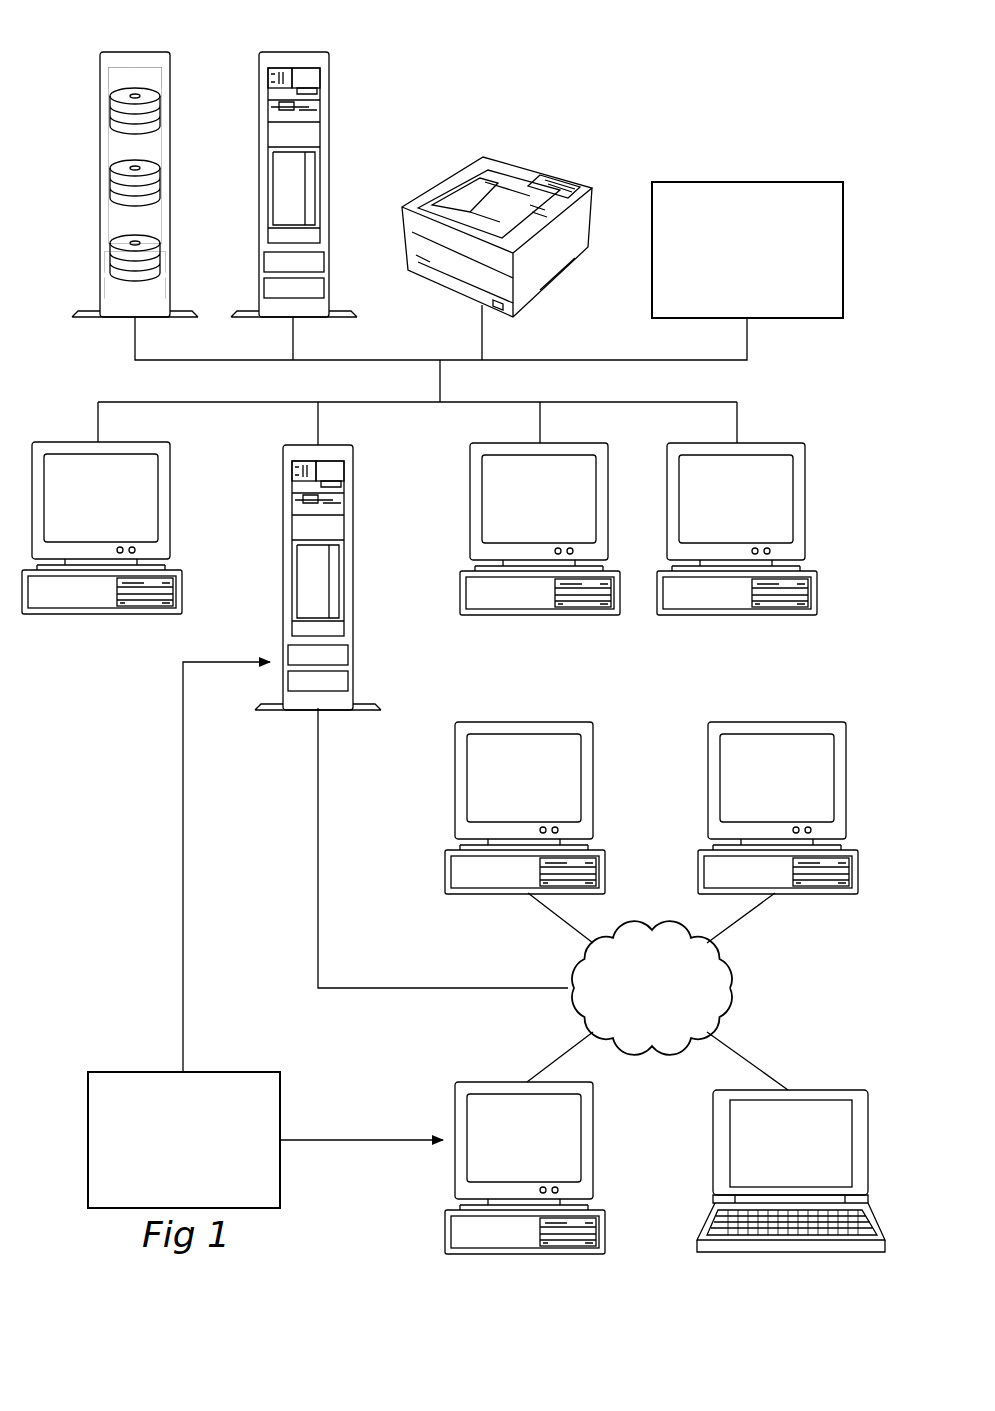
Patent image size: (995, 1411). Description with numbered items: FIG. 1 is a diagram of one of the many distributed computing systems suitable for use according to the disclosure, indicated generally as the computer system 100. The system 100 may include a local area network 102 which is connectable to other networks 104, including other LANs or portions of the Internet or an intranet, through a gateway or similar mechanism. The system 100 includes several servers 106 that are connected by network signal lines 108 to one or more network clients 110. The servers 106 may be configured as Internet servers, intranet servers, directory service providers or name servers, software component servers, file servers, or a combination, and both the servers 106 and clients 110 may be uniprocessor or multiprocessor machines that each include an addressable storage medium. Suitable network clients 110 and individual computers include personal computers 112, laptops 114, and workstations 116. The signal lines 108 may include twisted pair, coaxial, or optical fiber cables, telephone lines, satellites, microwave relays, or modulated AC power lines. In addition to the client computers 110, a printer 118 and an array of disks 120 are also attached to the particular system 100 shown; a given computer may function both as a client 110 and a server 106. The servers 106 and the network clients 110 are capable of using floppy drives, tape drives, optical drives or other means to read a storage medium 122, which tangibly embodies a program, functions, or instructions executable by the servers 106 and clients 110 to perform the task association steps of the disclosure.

The computer system 100 is at (740, 62).
The local area network 102 is at (232, 405).
The other networks 104 is at (795, 182).
The servers 106 is at (295, 50).
The network signal lines 108 is at (320, 410).
The network clients 110 is at (778, 722).
The personal computers 112 is at (540, 698).
The laptops 114 is at (790, 1252).
The workstations 116 is at (800, 420).
The printer 118 is at (532, 170).
The array of disks 120 is at (137, 50).
The storage medium 122 is at (135, 1072).